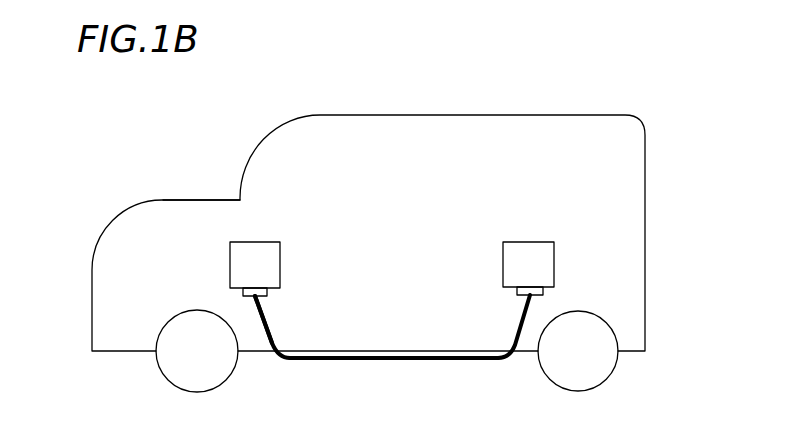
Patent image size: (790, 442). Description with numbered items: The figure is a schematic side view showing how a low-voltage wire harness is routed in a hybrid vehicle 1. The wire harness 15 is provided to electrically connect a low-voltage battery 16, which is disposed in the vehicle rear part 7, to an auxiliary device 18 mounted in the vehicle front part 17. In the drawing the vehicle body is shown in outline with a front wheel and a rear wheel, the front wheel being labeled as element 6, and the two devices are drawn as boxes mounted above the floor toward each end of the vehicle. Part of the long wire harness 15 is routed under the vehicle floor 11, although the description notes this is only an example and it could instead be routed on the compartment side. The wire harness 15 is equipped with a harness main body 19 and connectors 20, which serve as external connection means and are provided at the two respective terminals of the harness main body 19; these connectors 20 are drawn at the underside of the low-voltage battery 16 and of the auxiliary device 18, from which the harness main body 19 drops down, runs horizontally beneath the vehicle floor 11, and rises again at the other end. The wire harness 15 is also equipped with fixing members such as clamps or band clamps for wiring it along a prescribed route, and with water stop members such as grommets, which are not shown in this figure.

The hybrid vehicle 1 is at (411, 113).
The front wheel 6 is at (110, 325).
The vehicle rear part 7 is at (627, 317).
The vehicle floor 11 is at (457, 352).
The wire harness 15 is at (305, 362).
The low-voltage battery 16 is at (538, 255).
The vehicle front part 17 is at (216, 208).
The auxiliary device 18 is at (270, 255).
The harness main body 19 is at (267, 321).
The connectors 20 is at (268, 293).